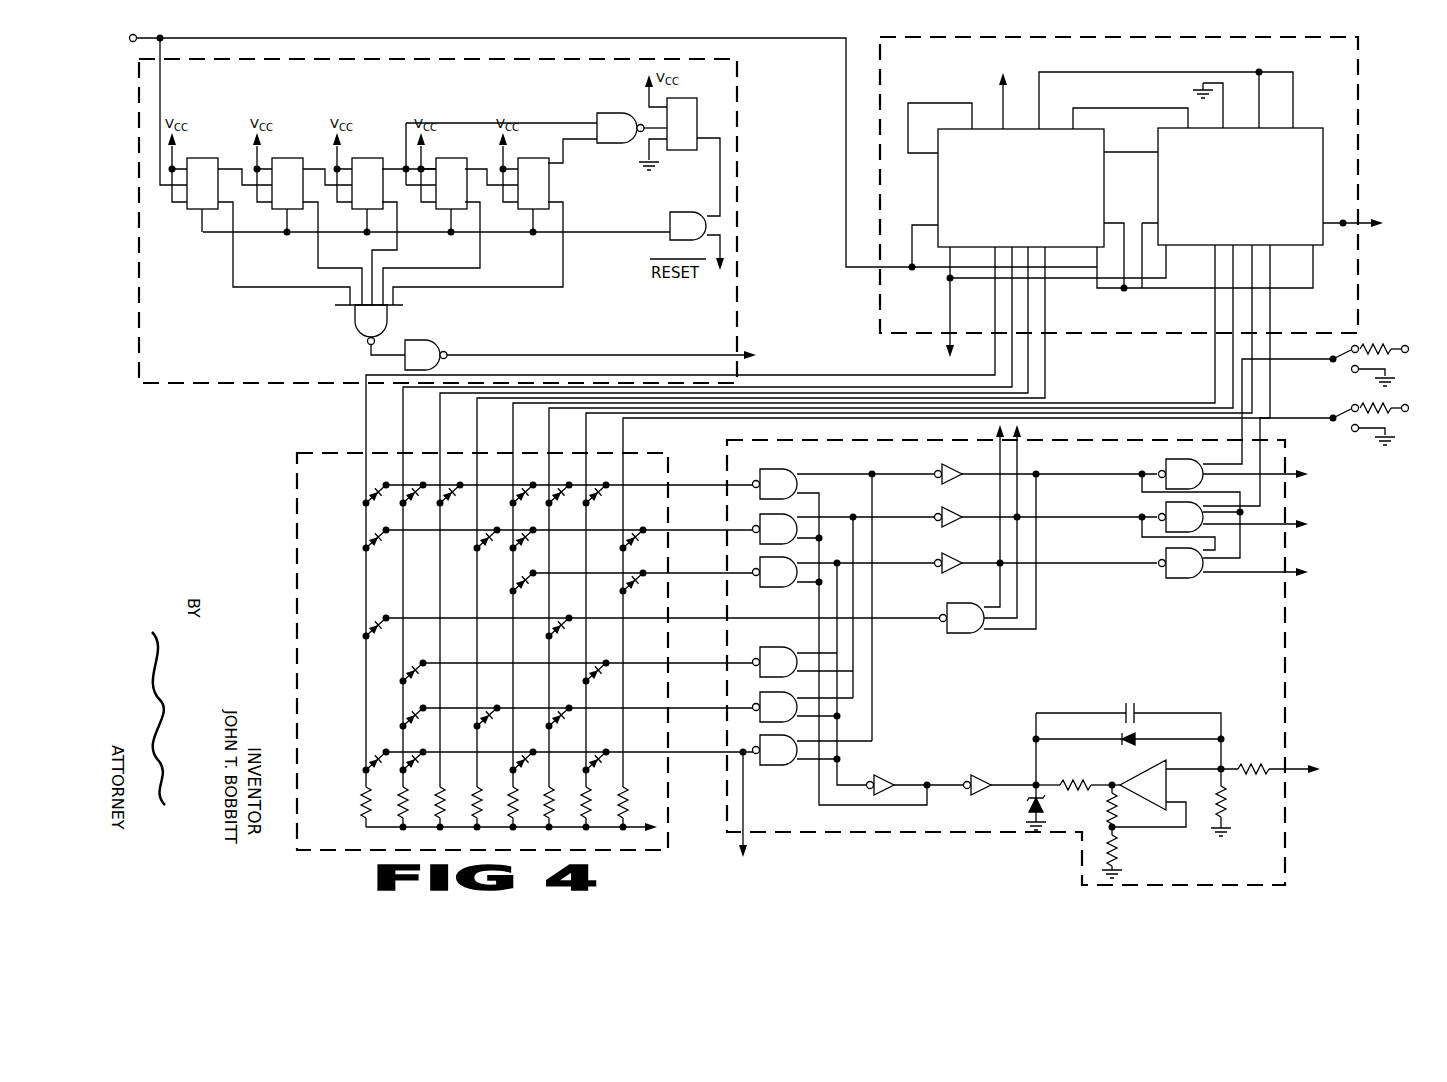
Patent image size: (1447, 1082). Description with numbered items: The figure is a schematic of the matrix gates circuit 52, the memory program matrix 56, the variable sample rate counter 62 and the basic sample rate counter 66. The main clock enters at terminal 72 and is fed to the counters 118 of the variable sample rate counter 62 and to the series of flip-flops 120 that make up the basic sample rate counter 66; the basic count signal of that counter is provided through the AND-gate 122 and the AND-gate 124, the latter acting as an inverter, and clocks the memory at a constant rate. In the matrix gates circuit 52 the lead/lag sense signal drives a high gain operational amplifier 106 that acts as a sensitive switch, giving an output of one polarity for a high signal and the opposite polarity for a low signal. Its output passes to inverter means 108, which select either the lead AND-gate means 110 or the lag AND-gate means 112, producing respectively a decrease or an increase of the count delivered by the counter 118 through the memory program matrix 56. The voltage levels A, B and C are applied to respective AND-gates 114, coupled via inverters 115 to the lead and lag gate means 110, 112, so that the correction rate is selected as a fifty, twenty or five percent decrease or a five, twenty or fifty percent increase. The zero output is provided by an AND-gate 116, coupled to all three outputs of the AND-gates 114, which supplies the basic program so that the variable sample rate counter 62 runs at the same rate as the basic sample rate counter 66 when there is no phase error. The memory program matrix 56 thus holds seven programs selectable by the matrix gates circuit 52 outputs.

The terminal 72 is at (131, 42).
The basic sample rate counter 66 is at (218, 378).
The flip-flops 120 is at (388, 137).
The AND-gate 122 is at (389, 320).
The AND-gate 124 is at (438, 342).
The variable sample rate counter 62 is at (1358, 85).
The counter 118 is at (1150, 124).
The memory program matrix 56 is at (297, 492).
The matrix gates circuit 52 is at (1283, 652).
The lead AND-gate means 110 is at (832, 492).
The lag AND-gate means 112 is at (852, 710).
The inverters 115 is at (930, 545).
The AND-gate 116 is at (962, 633).
The AND-gates 114 is at (1190, 584).
The inverter means 108 is at (967, 776).
The operational amplifier 106 is at (1180, 758).